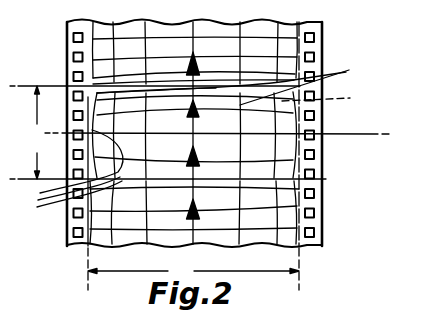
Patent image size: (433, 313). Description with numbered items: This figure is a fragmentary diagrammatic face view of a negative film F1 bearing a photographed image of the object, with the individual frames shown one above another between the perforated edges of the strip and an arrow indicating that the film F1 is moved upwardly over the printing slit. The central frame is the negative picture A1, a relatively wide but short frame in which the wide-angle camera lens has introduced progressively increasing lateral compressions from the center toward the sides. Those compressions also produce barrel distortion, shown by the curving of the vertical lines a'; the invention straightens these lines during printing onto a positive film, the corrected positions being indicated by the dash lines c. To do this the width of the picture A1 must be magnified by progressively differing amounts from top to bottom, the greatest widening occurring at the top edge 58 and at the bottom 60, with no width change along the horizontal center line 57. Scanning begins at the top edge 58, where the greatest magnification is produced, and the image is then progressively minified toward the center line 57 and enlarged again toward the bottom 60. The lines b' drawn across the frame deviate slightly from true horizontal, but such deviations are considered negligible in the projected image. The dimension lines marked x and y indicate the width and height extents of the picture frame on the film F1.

The horizontal center line 57 is at (357, 134).
The top edge 58 is at (97, 93).
The bottom 60 is at (299, 188).
The negative picture A1 is at (297, 150).
The negative film F1 is at (322, 219).
The vertical lines a' is at (231, 81).
The dash lines c is at (322, 97).
The lines b' is at (68, 179).
The frame width dimension x is at (193, 269).
The frame height dimension y is at (34, 132).